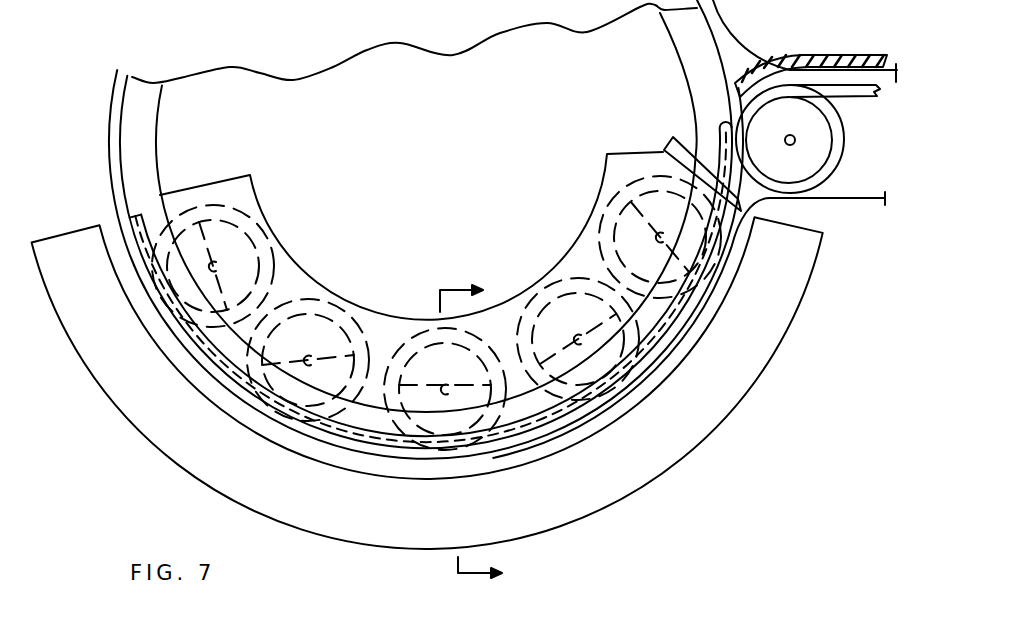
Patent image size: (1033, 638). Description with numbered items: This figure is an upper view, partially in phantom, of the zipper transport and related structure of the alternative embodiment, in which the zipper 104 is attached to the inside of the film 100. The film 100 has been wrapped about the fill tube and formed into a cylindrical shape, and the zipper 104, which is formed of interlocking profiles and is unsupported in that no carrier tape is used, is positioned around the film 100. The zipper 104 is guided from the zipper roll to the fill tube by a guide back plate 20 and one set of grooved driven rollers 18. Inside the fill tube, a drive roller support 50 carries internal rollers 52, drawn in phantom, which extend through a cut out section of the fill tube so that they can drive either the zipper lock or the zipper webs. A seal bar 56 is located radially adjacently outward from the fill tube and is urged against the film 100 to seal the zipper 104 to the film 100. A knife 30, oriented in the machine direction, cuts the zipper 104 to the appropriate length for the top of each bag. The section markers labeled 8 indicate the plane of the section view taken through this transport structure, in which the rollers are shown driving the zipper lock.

The section line 8- 8 is at (471, 435).
The grooved driven rollers 18 is at (818, 180).
The guide back plate 20 is at (802, 63).
The knife 30 is at (663, 140).
The drive roller support 50 is at (247, 185).
The internal rollers 52 is at (410, 328).
The seal bar 56 is at (707, 380).
The film 100 is at (727, 28).
The zipper 104 is at (733, 243).